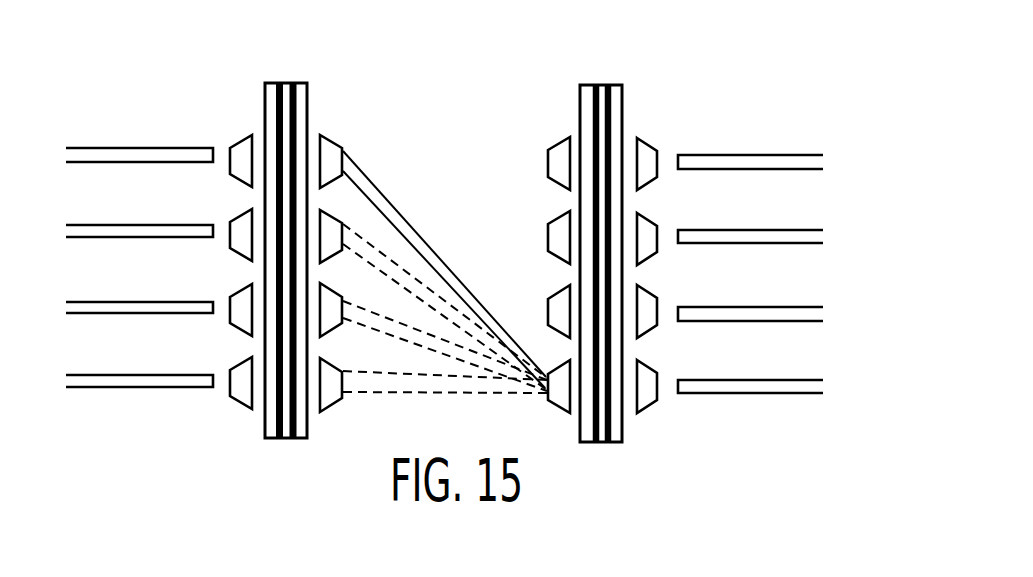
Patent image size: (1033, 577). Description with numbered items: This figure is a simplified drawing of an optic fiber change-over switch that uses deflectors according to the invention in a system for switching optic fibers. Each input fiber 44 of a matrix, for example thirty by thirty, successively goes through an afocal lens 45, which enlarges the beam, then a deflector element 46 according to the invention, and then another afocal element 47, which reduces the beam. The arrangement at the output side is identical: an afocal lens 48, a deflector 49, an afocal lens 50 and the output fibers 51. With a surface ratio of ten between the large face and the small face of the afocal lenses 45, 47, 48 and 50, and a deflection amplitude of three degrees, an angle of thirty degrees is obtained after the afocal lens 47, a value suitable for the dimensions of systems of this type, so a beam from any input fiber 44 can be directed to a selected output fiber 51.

The input fiber 44 is at (158, 163).
The afocal lens 45 is at (236, 146).
The deflector element 46 is at (288, 84).
The afocal element 47 is at (342, 210).
The afocal lens 48 is at (548, 172).
The deflector 49 is at (601, 86).
The afocal lens 50 is at (652, 146).
The output fiber 51 is at (728, 170).